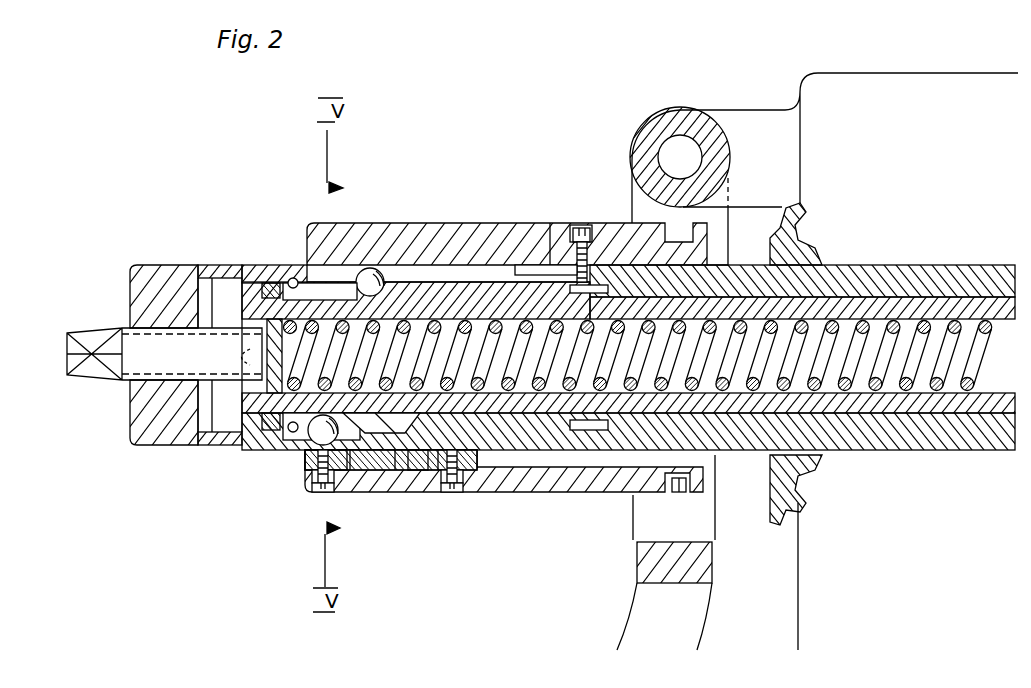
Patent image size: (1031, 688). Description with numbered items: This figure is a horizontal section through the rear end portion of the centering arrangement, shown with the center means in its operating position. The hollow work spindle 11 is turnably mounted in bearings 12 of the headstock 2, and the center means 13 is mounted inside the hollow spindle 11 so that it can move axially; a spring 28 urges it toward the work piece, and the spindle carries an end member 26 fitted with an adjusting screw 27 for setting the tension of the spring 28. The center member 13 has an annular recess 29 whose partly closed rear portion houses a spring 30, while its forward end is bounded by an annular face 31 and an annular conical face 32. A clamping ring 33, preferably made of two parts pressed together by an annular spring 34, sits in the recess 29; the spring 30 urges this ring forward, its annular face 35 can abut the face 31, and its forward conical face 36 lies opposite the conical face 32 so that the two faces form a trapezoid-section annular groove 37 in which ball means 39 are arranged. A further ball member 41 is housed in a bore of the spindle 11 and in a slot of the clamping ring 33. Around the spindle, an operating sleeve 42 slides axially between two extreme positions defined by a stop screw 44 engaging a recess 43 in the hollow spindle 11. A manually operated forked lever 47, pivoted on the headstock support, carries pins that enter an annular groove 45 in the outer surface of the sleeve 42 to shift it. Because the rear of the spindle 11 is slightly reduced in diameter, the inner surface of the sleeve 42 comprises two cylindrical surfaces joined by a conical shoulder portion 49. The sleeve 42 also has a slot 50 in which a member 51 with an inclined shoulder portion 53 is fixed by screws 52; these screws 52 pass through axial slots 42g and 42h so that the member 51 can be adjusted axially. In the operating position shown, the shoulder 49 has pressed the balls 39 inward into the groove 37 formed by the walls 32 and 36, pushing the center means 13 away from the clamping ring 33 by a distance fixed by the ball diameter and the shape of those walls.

The headstock 2 is at (812, 86).
The hollow spindle 11 is at (463, 272).
The bearings 12 is at (806, 258).
The center means 13 is at (868, 300).
The end member 26 is at (140, 440).
The adjusting screw 27 is at (137, 355).
The spring 28 is at (848, 392).
The annular recess 29 is at (266, 282).
The spring 30 is at (268, 432).
The annular face 31 is at (432, 470).
The annular conical face 32 is at (412, 470).
The clamping ring 33 is at (308, 283).
The annular spring 34 is at (291, 279).
The annular face 35 is at (348, 470).
The conical face 36 is at (367, 470).
The annular groove 37 is at (378, 434).
The ball means 39 is at (372, 268).
The ball member 41 is at (297, 436).
The operating sleeve 42 is at (506, 238).
The axial slot 42g is at (326, 485).
The axial slot 42h is at (470, 485).
The recess 43 is at (548, 238).
The stop screw 44 is at (589, 228).
The annular groove 45 is at (668, 480).
The forked lever 47 is at (700, 515).
The conical shoulder portion 49 is at (398, 270).
The slot 50 is at (532, 468).
The member 51 is at (300, 458).
The screws 52 is at (322, 492).
The inclined shoulder portion 53 is at (394, 470).